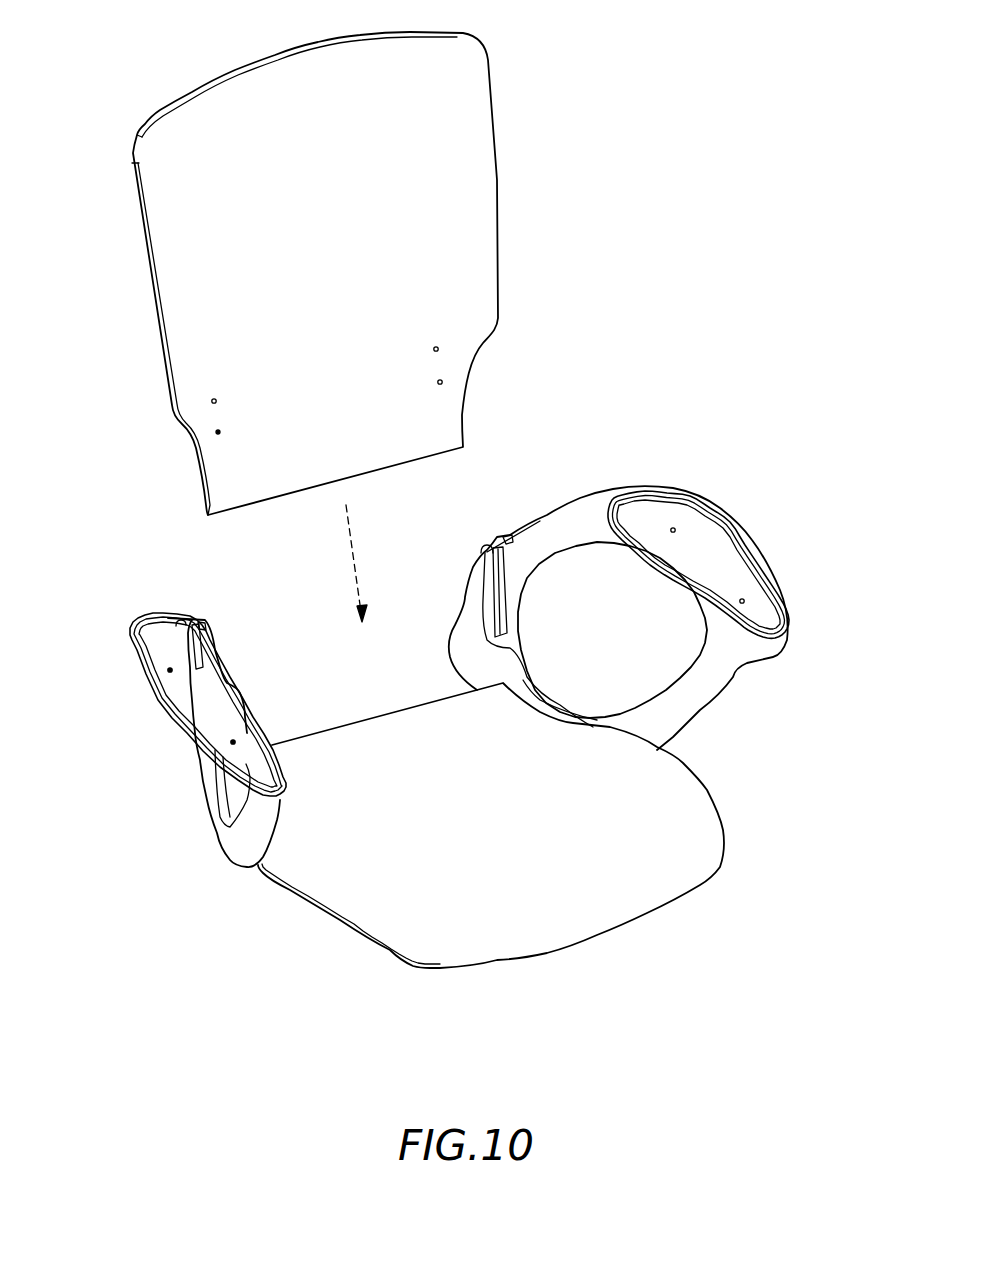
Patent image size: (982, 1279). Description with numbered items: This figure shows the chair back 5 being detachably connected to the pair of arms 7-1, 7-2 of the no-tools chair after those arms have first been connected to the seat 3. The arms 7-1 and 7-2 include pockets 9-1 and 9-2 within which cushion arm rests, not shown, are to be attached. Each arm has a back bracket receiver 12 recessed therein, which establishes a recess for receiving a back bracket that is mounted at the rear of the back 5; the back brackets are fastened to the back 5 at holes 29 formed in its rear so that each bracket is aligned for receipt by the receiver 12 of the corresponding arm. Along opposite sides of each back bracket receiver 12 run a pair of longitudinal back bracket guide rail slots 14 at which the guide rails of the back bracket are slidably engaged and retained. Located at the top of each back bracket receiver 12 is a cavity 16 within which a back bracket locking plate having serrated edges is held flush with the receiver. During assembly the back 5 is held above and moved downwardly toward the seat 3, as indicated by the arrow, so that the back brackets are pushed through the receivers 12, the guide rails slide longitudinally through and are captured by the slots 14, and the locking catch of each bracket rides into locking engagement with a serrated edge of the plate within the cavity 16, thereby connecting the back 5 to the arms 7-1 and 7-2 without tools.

The seat 3 is at (632, 895).
The chair back 5 is at (452, 133).
The arm 7-1 is at (237, 847).
The arm 7-2 is at (712, 675).
The pocket 9-1 is at (192, 693).
The pocket 9-2 is at (713, 563).
The back bracket receiver 12 is at (500, 583).
The back bracket guide rail slots 14 is at (505, 537).
The cavity 16 is at (487, 549).
The holes 29 is at (220, 430).